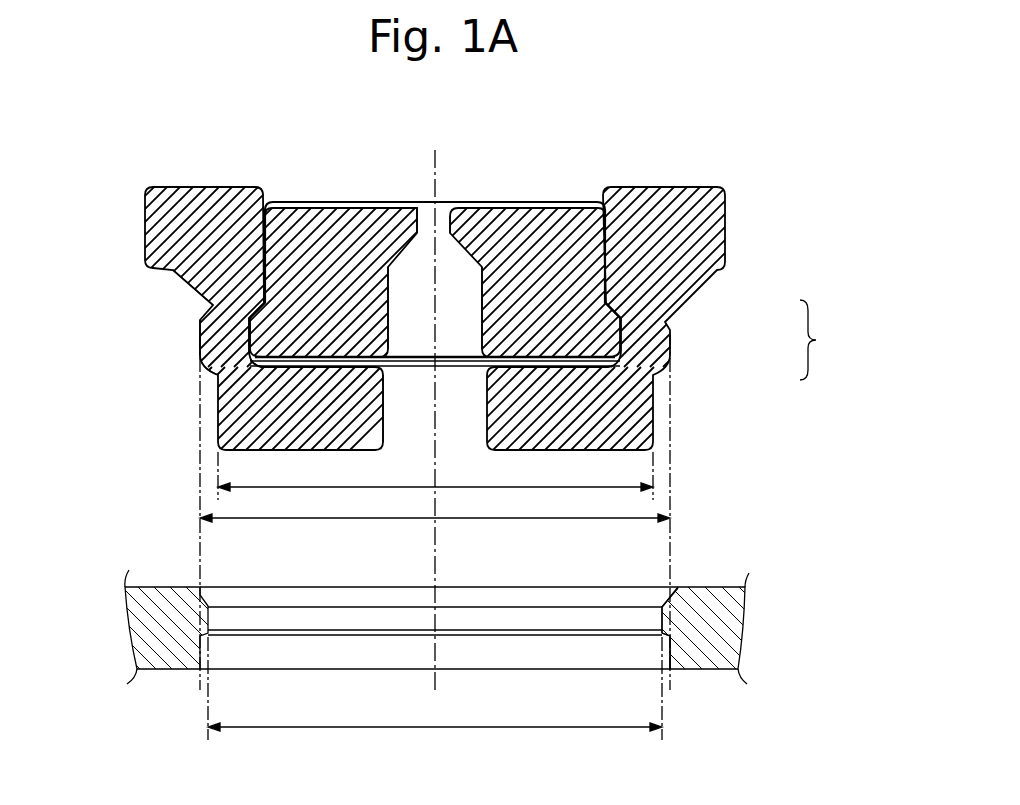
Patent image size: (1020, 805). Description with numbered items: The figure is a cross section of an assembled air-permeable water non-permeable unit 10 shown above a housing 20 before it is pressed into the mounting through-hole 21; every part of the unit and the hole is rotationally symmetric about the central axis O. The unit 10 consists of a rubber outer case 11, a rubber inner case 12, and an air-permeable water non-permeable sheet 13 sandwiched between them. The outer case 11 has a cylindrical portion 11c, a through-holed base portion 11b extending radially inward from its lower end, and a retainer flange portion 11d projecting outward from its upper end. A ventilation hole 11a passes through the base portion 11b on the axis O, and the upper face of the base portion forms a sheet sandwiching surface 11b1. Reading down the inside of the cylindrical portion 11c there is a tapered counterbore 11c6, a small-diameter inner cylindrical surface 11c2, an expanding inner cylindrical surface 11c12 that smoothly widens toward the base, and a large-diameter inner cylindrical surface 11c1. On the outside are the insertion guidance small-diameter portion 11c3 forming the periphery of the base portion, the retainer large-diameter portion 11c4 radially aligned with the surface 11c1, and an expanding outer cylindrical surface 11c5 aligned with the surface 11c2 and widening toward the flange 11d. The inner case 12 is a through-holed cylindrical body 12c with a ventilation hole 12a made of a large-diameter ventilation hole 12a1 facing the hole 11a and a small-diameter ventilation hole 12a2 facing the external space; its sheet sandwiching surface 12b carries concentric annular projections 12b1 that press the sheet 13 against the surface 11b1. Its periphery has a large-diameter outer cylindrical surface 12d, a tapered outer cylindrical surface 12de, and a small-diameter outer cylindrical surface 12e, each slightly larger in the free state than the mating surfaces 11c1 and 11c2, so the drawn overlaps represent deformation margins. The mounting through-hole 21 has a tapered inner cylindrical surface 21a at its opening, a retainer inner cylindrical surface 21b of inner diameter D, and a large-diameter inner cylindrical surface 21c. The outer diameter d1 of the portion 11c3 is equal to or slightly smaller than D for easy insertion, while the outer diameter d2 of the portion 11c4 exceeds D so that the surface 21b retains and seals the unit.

The air-permeable water non-permeable unit 10 is at (824, 340).
The outer case 11 is at (657, 290).
The ventilation hole 11a is at (385, 383).
The through-holed base portion 11b is at (273, 444).
The sheet sandwiching surface 11b1 is at (527, 363).
The cylindrical portion 11c is at (228, 230).
The large-diameter inner cylindrical surface 11c1 is at (247, 342).
The small-diameter inner cylindrical surface 11c2 is at (268, 237).
The insertion guidance small-diameter portion 11c3 is at (217, 403).
The retainer large-diameter portion 11c4 is at (250, 347).
The expanding outer cylindrical surface 11c5 is at (253, 305).
The tapered inner cylindrical surface 11c6 is at (266, 215).
The expanding inner cylindrical surface 11c12 is at (265, 303).
The retainer flange portion 11d is at (158, 187).
The inner case 12 is at (603, 327).
The ventilation hole 12a is at (387, 287).
The large-diameter ventilation hole 12a1 is at (480, 347).
The small-diameter ventilation hole 12a2 is at (440, 203).
The sheet sandwiching surface 12b is at (502, 363).
The concentric annular projections 12b1 is at (547, 365).
The through-holed cylindrical body 12c is at (515, 203).
The large-diameter outer cylindrical surface 12d is at (237, 340).
The tapered outer cylindrical surface 12de is at (247, 317).
The small-diameter outer cylindrical surface 12e is at (262, 258).
The air-permeable water non-permeable sheet 13 is at (585, 367).
The housing 20 is at (704, 566).
The mounting through-hole 21 is at (516, 658).
The tapered inner cylindrical surface 21a is at (665, 605).
The retainer inner cylindrical surface 21b is at (660, 618).
The large-diameter inner cylindrical surface 21c is at (668, 650).
The central axis O is at (435, 408).
The outer diameter of insertion guidance small-diameter portion d1 is at (435, 476).
The outer diameter of retainer large-diameter portion d2 is at (435, 512).
The inner diameter of retainer inner cylindrical surface D is at (435, 688).